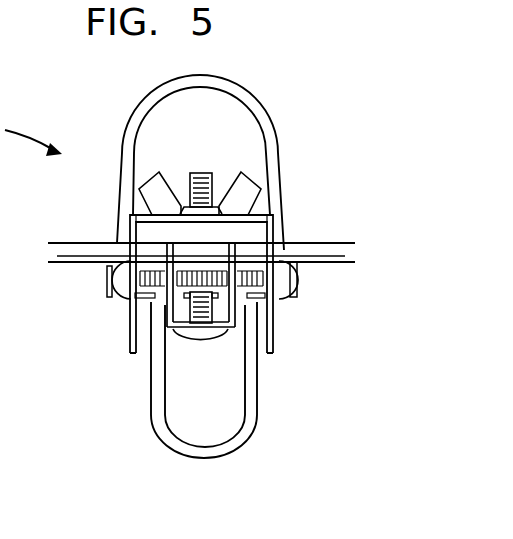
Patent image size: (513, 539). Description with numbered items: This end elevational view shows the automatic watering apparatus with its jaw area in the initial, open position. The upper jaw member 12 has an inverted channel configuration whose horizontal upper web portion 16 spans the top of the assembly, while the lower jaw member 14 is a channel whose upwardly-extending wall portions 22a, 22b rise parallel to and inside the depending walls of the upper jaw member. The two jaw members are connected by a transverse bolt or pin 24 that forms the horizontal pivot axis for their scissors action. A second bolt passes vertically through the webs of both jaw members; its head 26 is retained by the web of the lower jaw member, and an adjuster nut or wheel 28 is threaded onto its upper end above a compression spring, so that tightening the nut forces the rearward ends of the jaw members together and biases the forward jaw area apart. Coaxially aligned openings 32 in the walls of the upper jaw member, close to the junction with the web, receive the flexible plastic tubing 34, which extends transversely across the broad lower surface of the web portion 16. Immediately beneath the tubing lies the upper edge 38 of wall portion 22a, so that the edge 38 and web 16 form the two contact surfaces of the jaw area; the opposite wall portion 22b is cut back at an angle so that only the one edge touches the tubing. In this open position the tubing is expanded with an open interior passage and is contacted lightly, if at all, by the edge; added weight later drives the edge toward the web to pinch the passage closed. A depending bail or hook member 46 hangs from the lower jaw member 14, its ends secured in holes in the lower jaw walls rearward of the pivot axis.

The upper jaw member 12 is at (278, 135).
The lower jaw member 14 is at (171, 335).
The upper web portion 16 is at (255, 222).
The wall portion 22a is at (170, 305).
The wall portion 22b is at (238, 311).
The transverse bolt or pin 24 is at (115, 298).
The head of the bolt 26 is at (203, 343).
The adjuster nut or wheel 28 is at (157, 172).
The coaxially aligned openings 32 is at (128, 217).
The flexible plastic tubing 34 is at (73, 267).
The upper edge of the wall portion 38 is at (172, 258).
The depending bail or hook member 46 is at (150, 402).